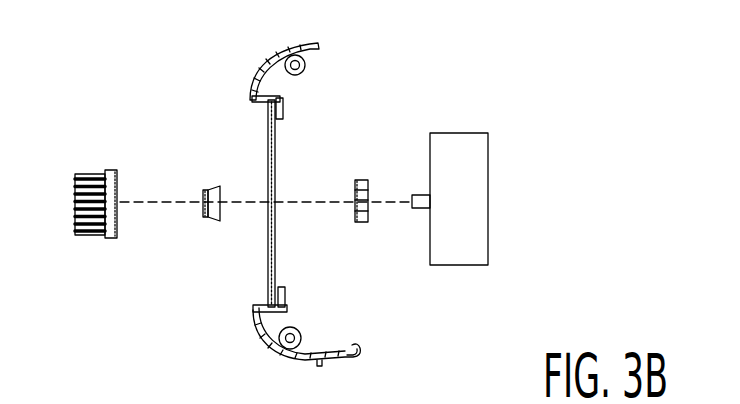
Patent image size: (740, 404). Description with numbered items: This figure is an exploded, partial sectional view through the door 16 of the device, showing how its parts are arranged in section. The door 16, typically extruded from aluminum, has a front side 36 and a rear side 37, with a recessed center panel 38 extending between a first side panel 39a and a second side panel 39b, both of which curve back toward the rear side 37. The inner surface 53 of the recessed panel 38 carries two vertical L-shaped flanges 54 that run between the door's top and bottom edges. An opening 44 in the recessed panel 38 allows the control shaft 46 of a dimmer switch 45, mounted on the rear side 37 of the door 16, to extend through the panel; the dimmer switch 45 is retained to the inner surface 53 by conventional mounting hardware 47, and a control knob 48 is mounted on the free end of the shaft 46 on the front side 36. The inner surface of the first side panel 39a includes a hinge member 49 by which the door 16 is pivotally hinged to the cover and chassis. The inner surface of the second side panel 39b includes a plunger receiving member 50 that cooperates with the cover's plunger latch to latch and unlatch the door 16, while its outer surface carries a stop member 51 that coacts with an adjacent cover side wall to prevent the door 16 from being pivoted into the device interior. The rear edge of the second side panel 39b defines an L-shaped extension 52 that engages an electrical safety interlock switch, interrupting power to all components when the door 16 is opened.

The door 16 is at (252, 93).
The front side 36 is at (230, 149).
The rear side 37 is at (363, 263).
The recessed center panel 38 is at (268, 127).
The first side panel 39a is at (270, 56).
The second side panel 39b is at (280, 363).
The opening 44 is at (270, 208).
The dimmer switch 45 is at (458, 133).
The control shaft 46 is at (420, 209).
The mounting hardware 47 is at (215, 192).
The control knob 48 is at (90, 172).
The hinge member 49 is at (307, 64).
The plunger receiving member 50 is at (296, 328).
The stop member 51 is at (323, 366).
The L-shaped extension 52 is at (350, 353).
The inner surface 53 is at (276, 172).
The L-shaped flanges 54 is at (285, 108).